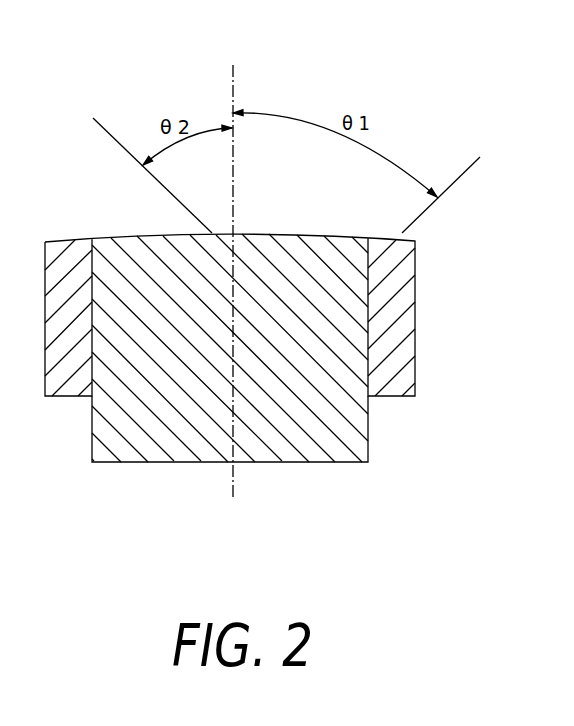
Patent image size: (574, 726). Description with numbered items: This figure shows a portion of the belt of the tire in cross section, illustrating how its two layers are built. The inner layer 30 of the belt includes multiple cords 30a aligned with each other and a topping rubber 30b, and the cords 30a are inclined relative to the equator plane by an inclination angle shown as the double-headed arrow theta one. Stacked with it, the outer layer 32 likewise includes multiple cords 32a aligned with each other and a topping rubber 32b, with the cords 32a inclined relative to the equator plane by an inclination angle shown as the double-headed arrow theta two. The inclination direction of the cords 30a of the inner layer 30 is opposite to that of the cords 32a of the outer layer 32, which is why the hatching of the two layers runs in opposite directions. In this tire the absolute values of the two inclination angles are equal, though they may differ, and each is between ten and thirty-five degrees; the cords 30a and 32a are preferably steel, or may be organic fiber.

The inner layer 30 is at (289, 348).
The cords 30a is at (492, 272).
The topping rubber 30b is at (402, 296).
The outer layer 32 is at (307, 352).
The cords 32a is at (370, 407).
The topping rubber 32b is at (357, 450).